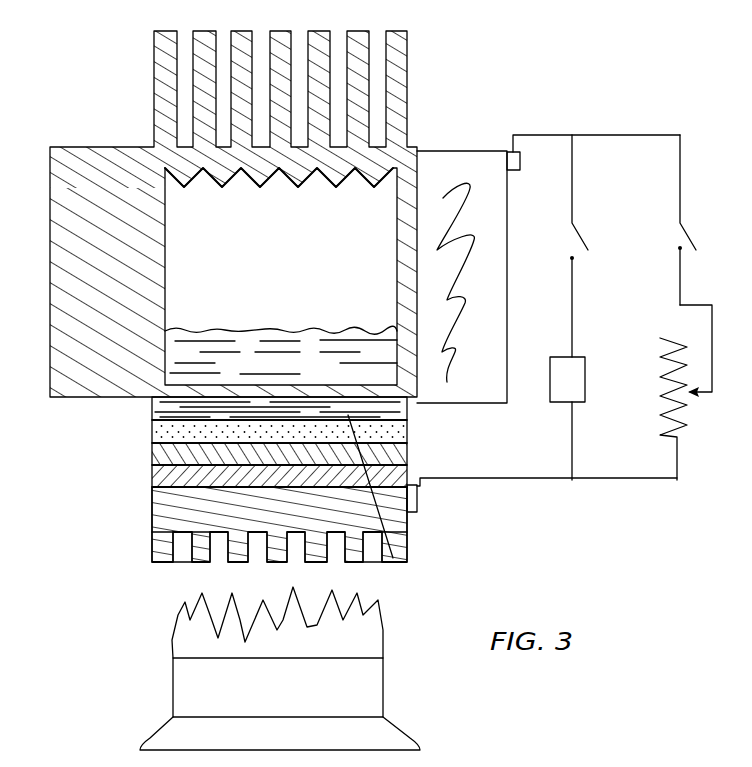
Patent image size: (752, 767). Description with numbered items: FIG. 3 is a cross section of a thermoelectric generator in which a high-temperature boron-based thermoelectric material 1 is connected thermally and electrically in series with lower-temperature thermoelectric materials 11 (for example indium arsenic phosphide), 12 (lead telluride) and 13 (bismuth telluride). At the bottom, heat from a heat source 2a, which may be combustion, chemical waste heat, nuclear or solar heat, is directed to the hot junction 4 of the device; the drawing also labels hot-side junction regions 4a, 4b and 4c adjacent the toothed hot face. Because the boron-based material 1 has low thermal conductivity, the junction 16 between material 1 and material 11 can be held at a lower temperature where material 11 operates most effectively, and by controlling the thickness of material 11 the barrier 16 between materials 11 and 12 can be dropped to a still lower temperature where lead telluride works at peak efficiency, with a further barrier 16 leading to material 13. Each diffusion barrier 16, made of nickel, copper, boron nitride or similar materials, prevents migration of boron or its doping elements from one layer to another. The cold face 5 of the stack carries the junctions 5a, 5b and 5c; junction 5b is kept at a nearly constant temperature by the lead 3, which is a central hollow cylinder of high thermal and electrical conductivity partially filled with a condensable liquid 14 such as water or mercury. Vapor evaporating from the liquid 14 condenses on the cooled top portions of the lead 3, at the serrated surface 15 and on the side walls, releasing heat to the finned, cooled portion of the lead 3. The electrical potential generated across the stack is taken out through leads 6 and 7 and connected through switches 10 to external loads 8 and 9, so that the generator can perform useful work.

The boron-based thermoelectric material 1 is at (152, 478).
The heat source 2a is at (280, 668).
The lead 3 is at (407, 33).
The junction 4 is at (160, 482).
The junction 4a is at (222, 462).
The junction 4b is at (298, 438).
The junction 4c is at (405, 527).
The face 5 is at (158, 488).
The junction 5a is at (257, 443).
The junction 5b is at (362, 398).
The junction 5c is at (407, 470).
The lead 6 is at (541, 135).
The lead 7 is at (490, 480).
The external load 8 is at (567, 418).
The external load 9 is at (677, 392).
The switch 10 is at (647, 246).
The lower-temperature thermoelectric material 11 is at (152, 457).
The lower-temperature thermoelectric material 12 is at (152, 432).
The lower-temperature thermoelectric material 13 is at (152, 403).
The condensable liquid 14 is at (258, 360).
The condensing surface 15 is at (222, 192).
The diffusion barrier 16 is at (152, 408).